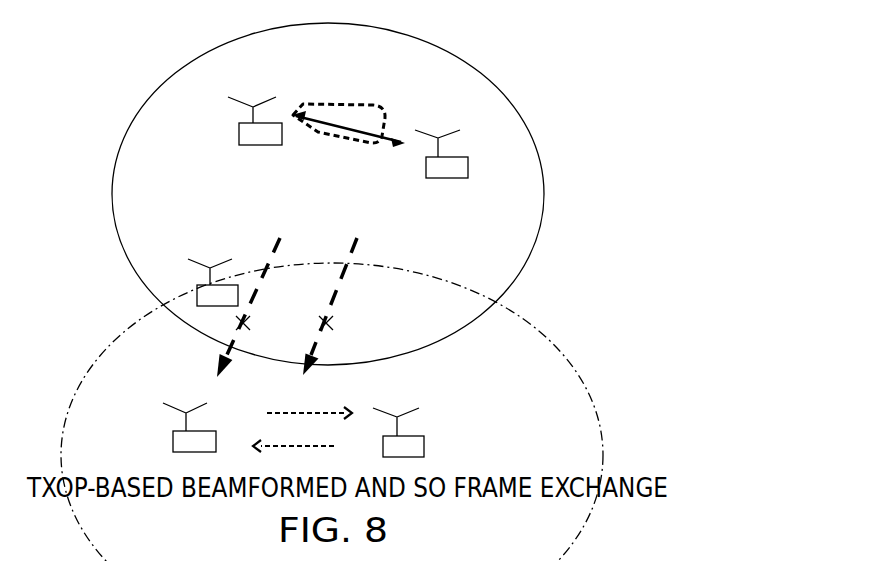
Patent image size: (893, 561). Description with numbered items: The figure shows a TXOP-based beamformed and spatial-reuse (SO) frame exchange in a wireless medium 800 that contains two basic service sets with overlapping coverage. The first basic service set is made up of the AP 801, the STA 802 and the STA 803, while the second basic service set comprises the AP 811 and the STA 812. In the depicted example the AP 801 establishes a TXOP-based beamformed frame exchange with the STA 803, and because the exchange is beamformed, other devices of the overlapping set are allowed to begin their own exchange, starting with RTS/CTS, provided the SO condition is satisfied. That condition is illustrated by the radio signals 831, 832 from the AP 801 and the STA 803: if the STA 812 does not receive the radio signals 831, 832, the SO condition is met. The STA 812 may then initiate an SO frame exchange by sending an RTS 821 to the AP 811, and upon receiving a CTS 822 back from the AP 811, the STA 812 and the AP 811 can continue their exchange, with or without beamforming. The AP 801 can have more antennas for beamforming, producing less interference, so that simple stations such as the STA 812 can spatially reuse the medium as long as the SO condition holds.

The wireless medium 800 is at (742, 37).
The AP 801 is at (240, 121).
The STA 802 is at (195, 275).
The STA 803 is at (459, 145).
The AP 811 is at (421, 434).
The STA 812 is at (169, 432).
The RTS 821 is at (287, 409).
The CTS 822 is at (314, 453).
The radio signal 831 is at (275, 243).
The radio signal 832 is at (357, 243).